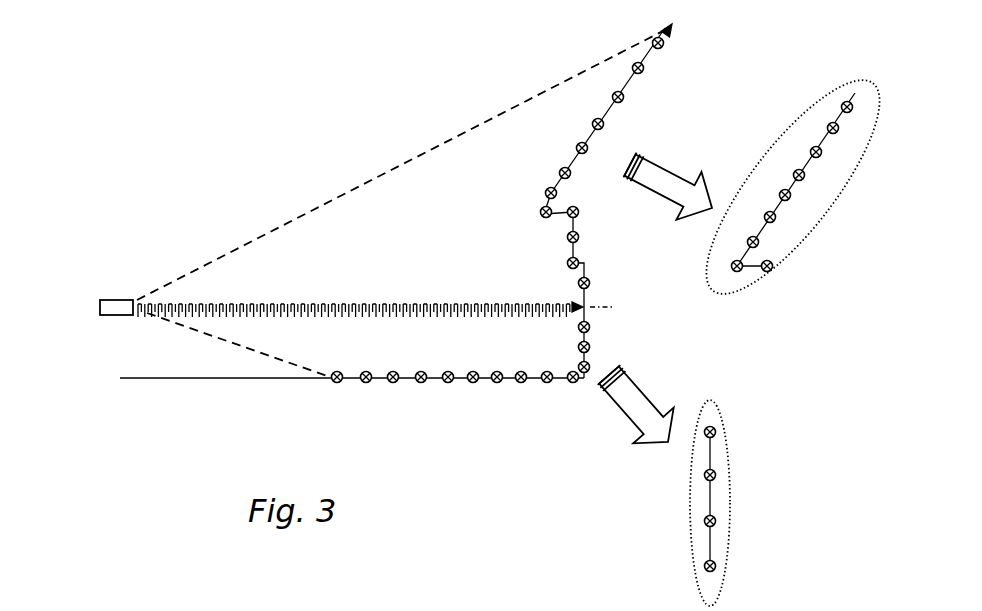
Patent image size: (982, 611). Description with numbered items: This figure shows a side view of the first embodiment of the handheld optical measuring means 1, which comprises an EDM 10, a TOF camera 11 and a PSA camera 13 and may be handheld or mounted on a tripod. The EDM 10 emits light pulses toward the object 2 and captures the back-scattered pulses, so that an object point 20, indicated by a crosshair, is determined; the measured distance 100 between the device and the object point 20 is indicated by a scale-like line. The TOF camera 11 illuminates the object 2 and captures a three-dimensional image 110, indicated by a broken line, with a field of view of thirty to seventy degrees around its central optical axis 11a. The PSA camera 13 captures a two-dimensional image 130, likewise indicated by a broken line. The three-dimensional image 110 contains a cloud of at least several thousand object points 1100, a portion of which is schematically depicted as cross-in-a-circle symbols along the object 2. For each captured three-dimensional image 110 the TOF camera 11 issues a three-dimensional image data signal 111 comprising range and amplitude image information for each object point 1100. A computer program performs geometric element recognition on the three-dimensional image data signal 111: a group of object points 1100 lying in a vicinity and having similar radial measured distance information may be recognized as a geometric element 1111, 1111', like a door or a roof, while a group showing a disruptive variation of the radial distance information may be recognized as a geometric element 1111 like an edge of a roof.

The handheld optical measuring means 1 is at (135, 262).
The EDM 10 is at (135, 262).
The TOF camera 11 is at (135, 262).
The PSA camera 13 is at (113, 300).
The central optical axis 11a is at (354, 239).
The measured distance 100 is at (273, 306).
The 3D image 110 is at (404, 200).
The 2D image 130 is at (380, 175).
The object 2 is at (635, 77).
The object points 1100 is at (521, 205).
The object point 20 is at (587, 306).
The 3D image data signal 111 is at (655, 170).
The geometric element 1111' is at (793, 187).
The geometric element 1111 is at (652, 503).